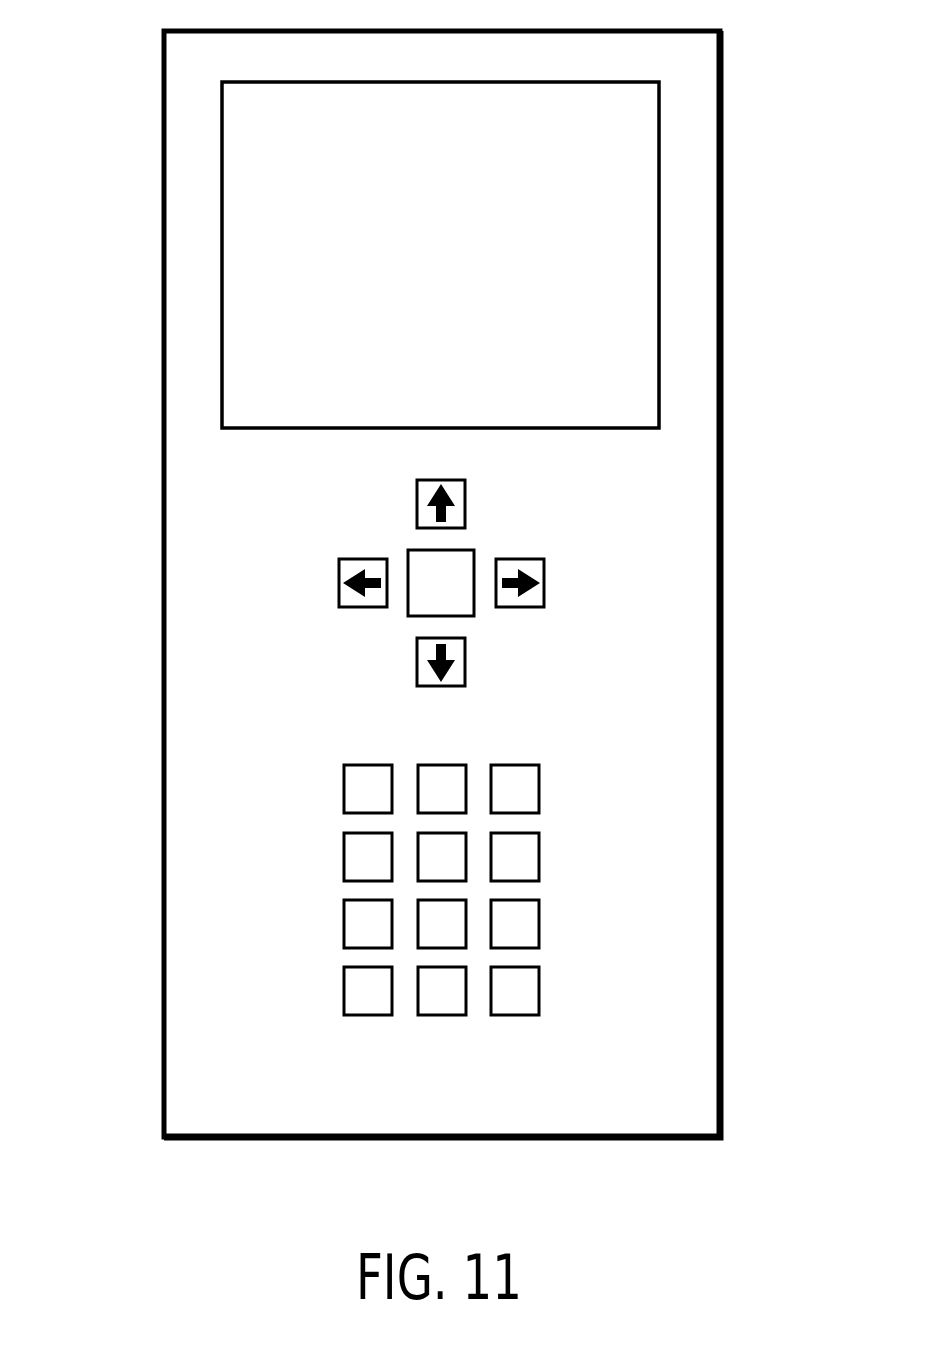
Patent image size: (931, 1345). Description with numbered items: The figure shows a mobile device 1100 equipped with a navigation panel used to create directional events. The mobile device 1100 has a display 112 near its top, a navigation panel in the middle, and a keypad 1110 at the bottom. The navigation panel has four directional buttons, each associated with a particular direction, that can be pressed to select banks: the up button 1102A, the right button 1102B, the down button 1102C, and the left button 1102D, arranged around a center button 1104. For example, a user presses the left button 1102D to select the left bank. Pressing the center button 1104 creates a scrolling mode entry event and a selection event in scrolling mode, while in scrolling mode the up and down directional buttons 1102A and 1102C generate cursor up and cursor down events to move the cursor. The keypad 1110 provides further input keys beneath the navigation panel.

The mobile device 1100 is at (163, 171).
The display 112 is at (660, 230).
The directional button 1102A is at (465, 501).
The directional button 1102B is at (543, 583).
The directional button 1102C is at (465, 658).
The directional button 1102D is at (338, 588).
The center button 1104 is at (413, 552).
The keypad 1110 is at (555, 885).